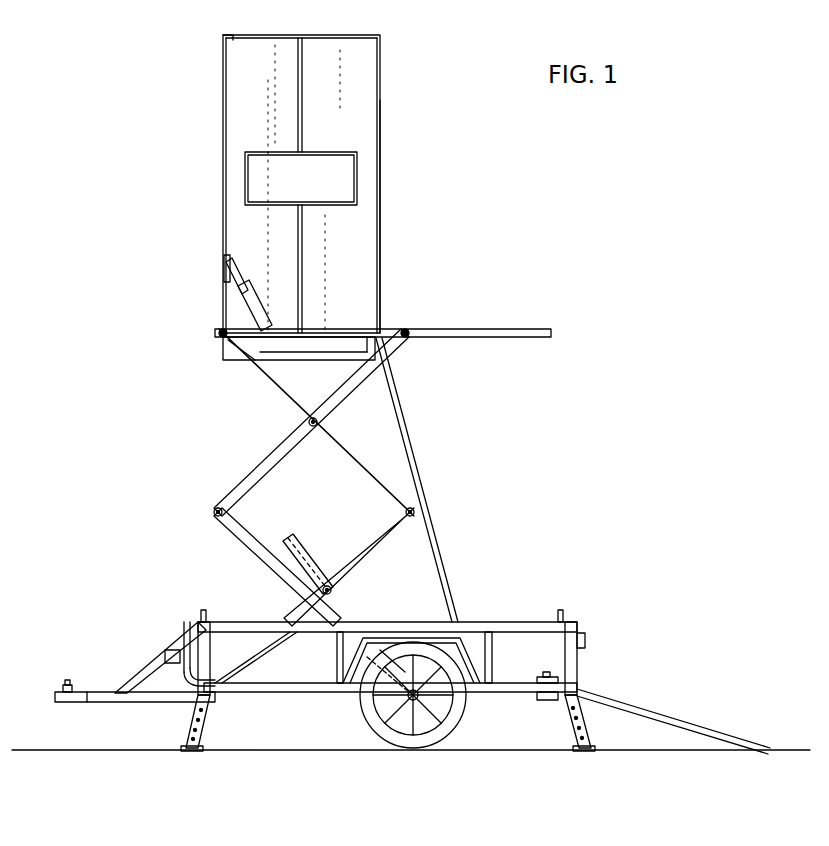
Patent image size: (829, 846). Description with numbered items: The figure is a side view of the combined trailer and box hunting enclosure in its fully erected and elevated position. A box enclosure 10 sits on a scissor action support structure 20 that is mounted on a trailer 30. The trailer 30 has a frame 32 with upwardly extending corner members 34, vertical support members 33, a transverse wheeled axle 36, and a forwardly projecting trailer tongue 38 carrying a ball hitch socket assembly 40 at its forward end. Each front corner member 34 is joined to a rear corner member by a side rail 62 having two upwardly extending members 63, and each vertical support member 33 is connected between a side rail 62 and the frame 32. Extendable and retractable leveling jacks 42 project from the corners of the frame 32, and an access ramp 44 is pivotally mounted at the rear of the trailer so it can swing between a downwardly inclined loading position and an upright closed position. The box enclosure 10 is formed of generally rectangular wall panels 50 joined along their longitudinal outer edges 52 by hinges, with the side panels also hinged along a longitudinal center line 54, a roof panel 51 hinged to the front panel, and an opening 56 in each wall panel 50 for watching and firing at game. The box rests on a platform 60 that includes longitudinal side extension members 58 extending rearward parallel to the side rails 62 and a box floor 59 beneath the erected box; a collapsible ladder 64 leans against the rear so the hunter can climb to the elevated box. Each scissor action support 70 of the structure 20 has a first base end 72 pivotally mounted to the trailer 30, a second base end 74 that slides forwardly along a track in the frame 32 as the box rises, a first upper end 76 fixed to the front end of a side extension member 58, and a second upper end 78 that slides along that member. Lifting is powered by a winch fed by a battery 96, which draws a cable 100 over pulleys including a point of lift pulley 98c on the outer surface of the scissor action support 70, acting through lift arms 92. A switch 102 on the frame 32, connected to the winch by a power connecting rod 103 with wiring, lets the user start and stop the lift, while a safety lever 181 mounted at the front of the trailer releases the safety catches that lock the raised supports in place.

The box enclosure 10 is at (212, 96).
The scissor action support structure 20 is at (230, 476).
The trailer 30 is at (156, 626).
The frame 32 is at (493, 693).
The vertical support member 33 is at (500, 632).
The corner member 34 is at (578, 660).
The transverse wheeled axle 36 is at (415, 700).
The trailer tongue 38 is at (100, 702).
The ball hitch socket assembly 40 is at (67, 680).
The leveling jack 42 is at (588, 735).
The access ramp 44 is at (715, 740).
The wall panel 50 is at (370, 128).
The roof panel 51 is at (233, 36).
The longitudinal outer edge 52 is at (380, 190).
The longitudinal center line 54 is at (303, 63).
The opening 56 is at (245, 180).
The longitudinal side extension member 58 is at (532, 329).
The box floor 59 is at (223, 349).
The platform 60 is at (572, 288).
The side rail 62 is at (520, 622).
The upwardly extending member 63 is at (562, 610).
The collapsible ladder 64 is at (410, 458).
The scissor action support 70 is at (392, 545).
The first base end 72 is at (218, 702).
The second base end 74 is at (395, 705).
The first upper end 76 is at (221, 332).
The second upper end 78 is at (406, 331).
The lift arm 92 is at (300, 592).
The battery 96 is at (545, 700).
The point of lift pulley 98c is at (333, 591).
The cable 100 is at (327, 552).
The switch 102 is at (165, 655).
The power connecting rod 103 is at (150, 690).
The safety lever 181 is at (185, 622).